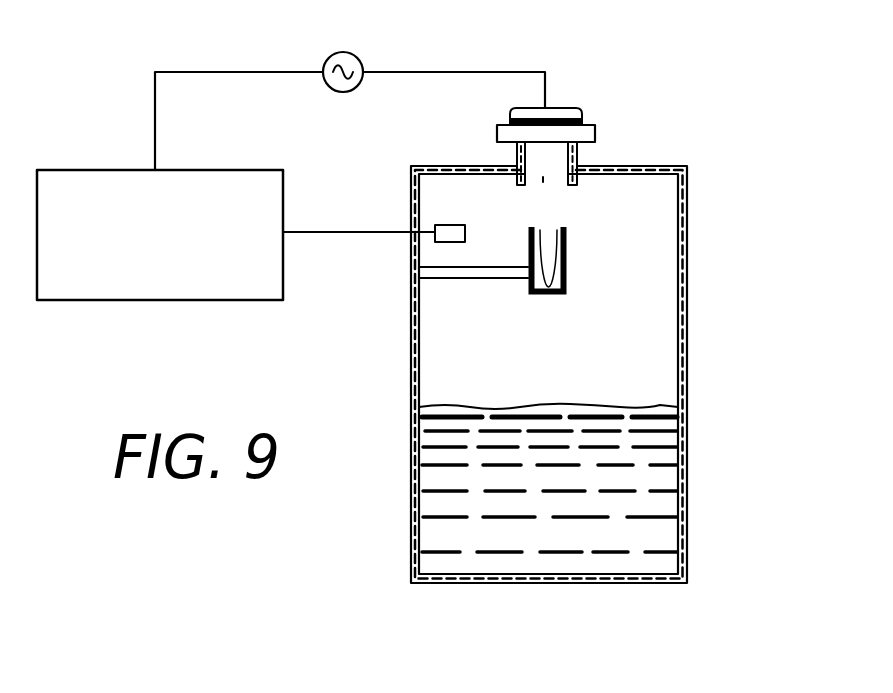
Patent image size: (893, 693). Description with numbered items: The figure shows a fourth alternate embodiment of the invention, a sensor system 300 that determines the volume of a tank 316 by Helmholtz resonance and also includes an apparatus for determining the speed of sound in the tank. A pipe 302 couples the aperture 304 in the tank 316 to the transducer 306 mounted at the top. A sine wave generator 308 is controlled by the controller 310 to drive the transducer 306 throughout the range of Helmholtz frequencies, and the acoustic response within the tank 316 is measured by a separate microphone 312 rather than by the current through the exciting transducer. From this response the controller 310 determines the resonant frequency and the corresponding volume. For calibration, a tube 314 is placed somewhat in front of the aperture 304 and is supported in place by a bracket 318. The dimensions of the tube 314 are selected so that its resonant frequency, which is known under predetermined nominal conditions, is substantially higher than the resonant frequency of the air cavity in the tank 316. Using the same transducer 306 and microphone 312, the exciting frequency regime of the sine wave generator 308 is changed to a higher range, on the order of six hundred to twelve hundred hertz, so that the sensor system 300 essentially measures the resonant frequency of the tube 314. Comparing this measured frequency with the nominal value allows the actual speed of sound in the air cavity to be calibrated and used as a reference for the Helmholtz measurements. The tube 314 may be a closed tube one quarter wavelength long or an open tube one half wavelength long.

The sensor system 300 is at (614, 334).
The pipe 302 is at (577, 158).
The aperture 304 is at (543, 177).
The transducer 306 is at (579, 114).
The sine wave generator 308 is at (356, 54).
The controller 310 is at (155, 300).
The microphone 312 is at (456, 225).
The tube 314 is at (567, 283).
The tank 316 is at (688, 316).
The bracket 318 is at (458, 279).